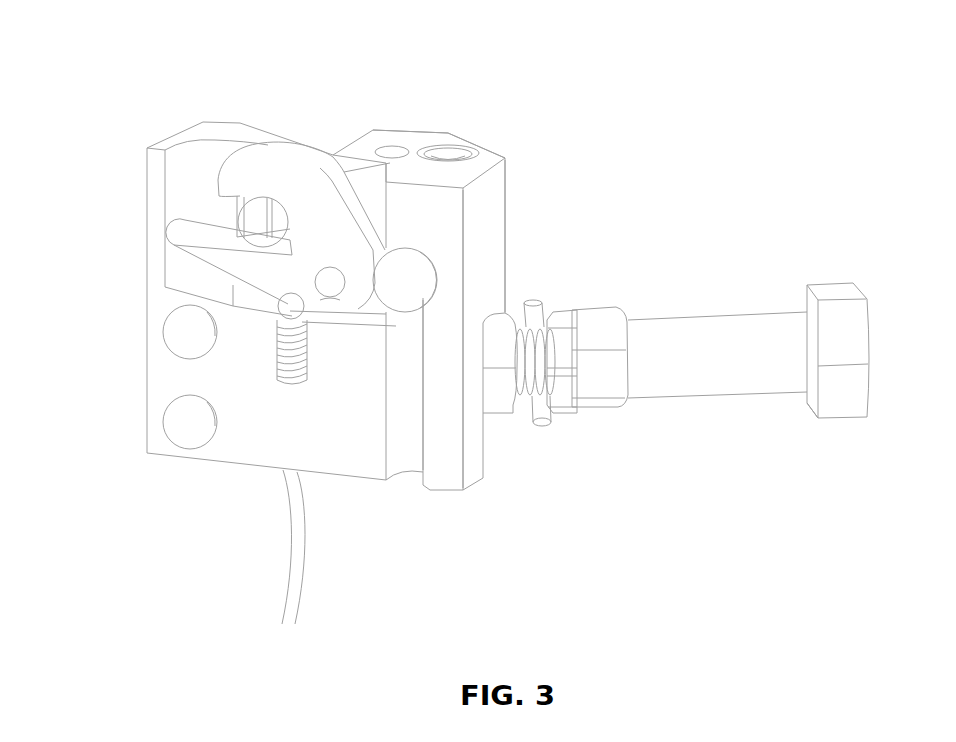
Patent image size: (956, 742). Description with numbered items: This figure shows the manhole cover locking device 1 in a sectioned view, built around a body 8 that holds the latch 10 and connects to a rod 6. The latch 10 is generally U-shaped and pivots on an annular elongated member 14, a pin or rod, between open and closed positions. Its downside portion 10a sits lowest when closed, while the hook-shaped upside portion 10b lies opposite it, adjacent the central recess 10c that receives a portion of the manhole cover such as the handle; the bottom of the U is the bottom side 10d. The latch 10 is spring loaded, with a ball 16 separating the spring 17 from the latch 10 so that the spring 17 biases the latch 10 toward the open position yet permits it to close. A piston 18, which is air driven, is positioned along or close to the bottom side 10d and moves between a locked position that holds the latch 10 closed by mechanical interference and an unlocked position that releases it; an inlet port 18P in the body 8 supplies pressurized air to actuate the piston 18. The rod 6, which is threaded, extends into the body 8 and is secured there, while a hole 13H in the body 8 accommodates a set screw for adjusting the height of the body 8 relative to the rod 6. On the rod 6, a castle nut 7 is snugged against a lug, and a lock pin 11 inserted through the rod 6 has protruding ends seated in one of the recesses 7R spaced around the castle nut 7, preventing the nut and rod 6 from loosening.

The manhole cover locking device 1 is at (744, 111).
The rod 6 is at (743, 328).
The castle nut 7 is at (600, 318).
The recesses 7R is at (570, 328).
The body 8 is at (157, 445).
The latch 10 is at (295, 183).
The downside portion 10a is at (192, 243).
The upside portion 10b is at (243, 173).
The central recess 10c is at (212, 199).
The bottom side 10d is at (338, 305).
The lock pin 11 is at (528, 313).
The hole 13H is at (392, 145).
The annular elongated member 14 is at (330, 277).
The ball 16 is at (287, 314).
The spring 17 is at (287, 357).
The piston 18 is at (402, 282).
The inlet port 18P is at (468, 142).